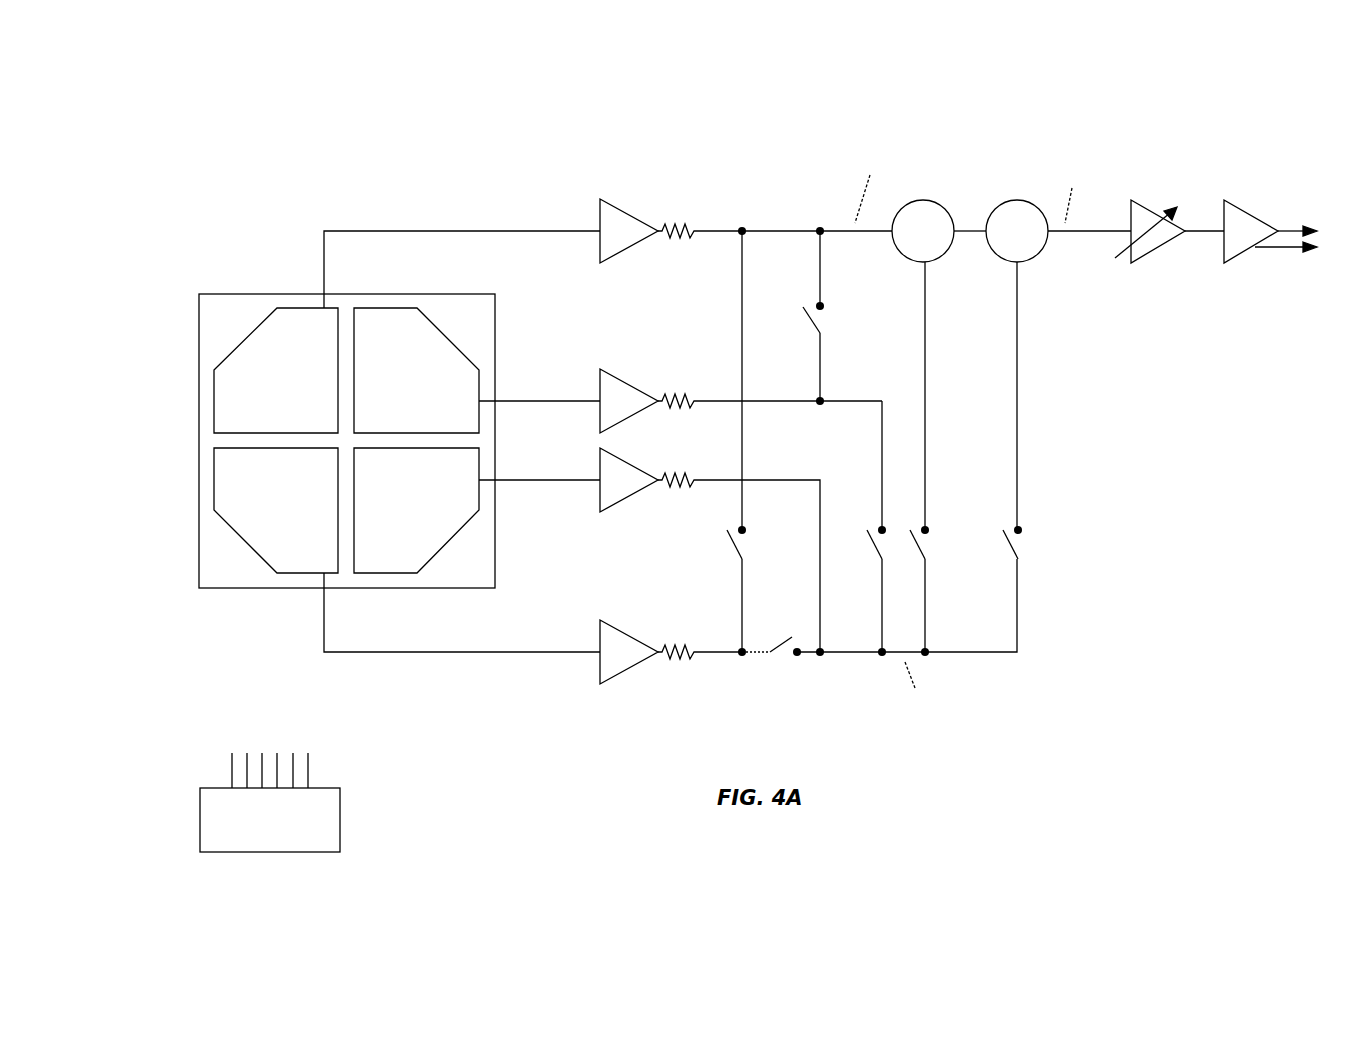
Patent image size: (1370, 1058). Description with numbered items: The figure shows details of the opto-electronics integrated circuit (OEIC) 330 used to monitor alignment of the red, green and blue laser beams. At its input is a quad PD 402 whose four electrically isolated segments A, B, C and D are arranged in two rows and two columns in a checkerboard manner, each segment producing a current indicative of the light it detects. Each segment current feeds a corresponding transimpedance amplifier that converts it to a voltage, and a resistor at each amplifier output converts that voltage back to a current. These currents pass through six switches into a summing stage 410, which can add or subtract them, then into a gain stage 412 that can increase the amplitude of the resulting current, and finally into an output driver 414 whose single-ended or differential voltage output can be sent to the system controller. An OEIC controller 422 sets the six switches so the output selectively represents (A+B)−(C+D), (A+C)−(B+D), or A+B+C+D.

The opto-electronics integrated circuit 330 is at (767, 441).
The quad photodetector 402 is at (497, 357).
The summing stage 410 is at (710, 97).
The gain stage 412 is at (1147, 205).
The output driver 414 is at (1242, 205).
The OEIC controller 422 is at (344, 818).